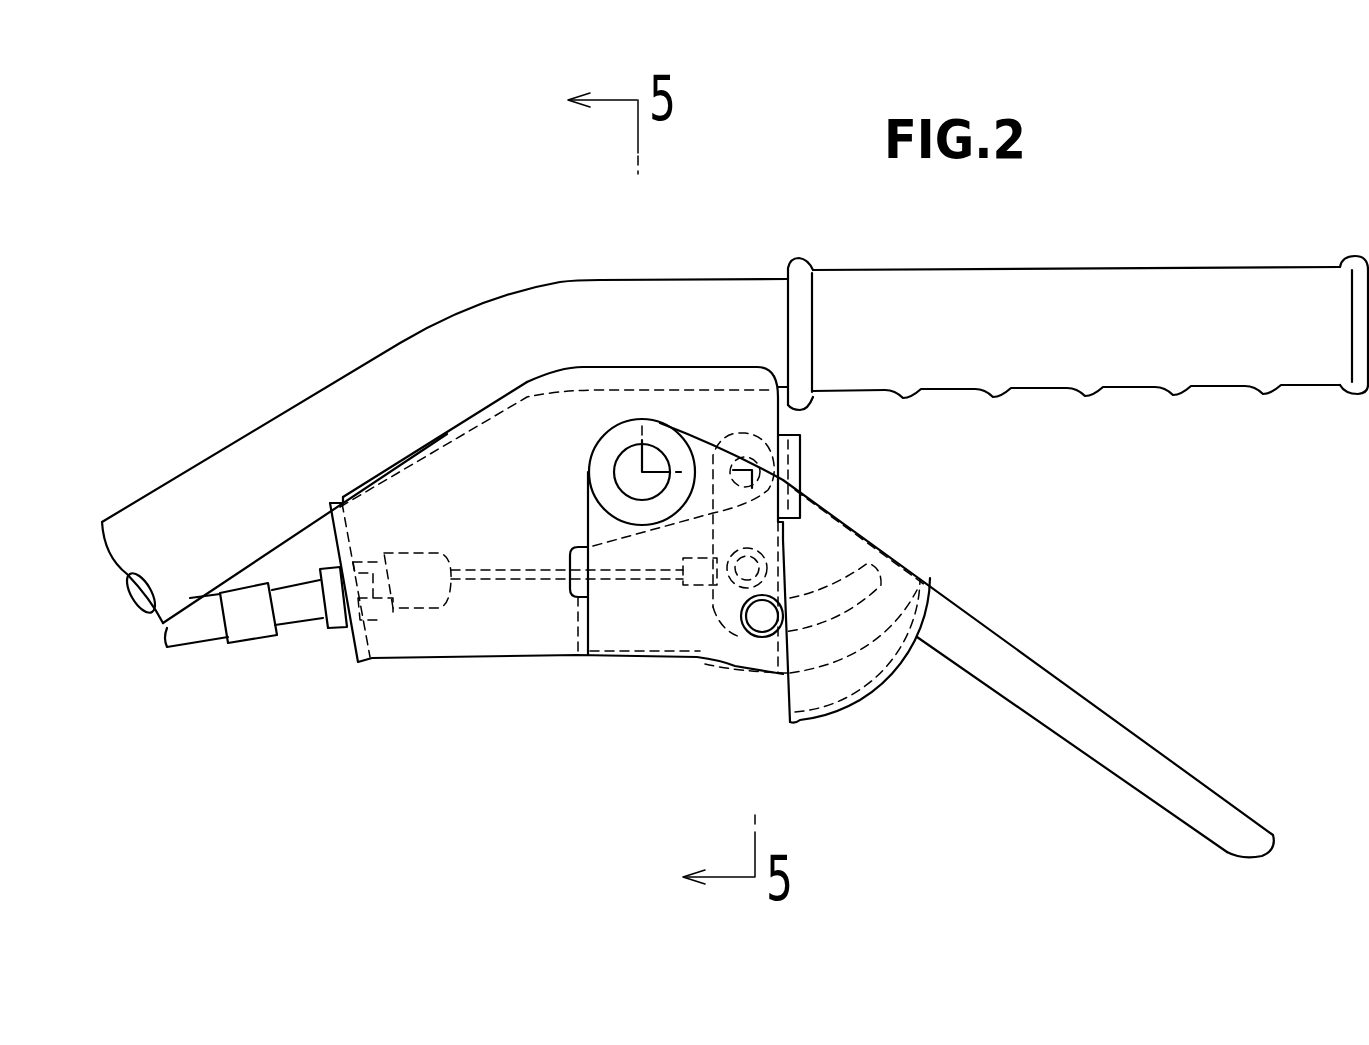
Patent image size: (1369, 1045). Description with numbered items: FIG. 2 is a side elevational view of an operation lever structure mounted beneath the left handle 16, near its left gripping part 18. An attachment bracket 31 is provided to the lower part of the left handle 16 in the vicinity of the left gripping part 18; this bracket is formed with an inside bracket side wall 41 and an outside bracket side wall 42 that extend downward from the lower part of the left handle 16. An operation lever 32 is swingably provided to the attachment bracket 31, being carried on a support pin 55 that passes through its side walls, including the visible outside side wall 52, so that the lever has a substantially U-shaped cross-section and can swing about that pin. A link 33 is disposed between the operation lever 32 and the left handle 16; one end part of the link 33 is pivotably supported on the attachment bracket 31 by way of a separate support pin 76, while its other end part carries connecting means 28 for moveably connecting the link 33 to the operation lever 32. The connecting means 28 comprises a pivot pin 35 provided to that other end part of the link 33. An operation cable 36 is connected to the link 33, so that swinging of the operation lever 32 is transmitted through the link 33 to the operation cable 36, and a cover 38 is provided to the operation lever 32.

The left handle 16 is at (707, 290).
The left gripping part 18 is at (1132, 278).
The connecting means 28 is at (757, 645).
The attachment bracket 31 is at (447, 431).
The operation lever 32 is at (1042, 663).
The link 33 is at (800, 466).
The pivot pin 35 is at (742, 628).
The operation cable 36 is at (478, 575).
The cover 38 is at (882, 679).
The inside bracket side wall 41 is at (373, 591).
The outside bracket side wall 42 is at (533, 420).
The outside side wall 52 is at (625, 633).
The support pin 55 is at (627, 475).
The support pin 76 is at (745, 463).